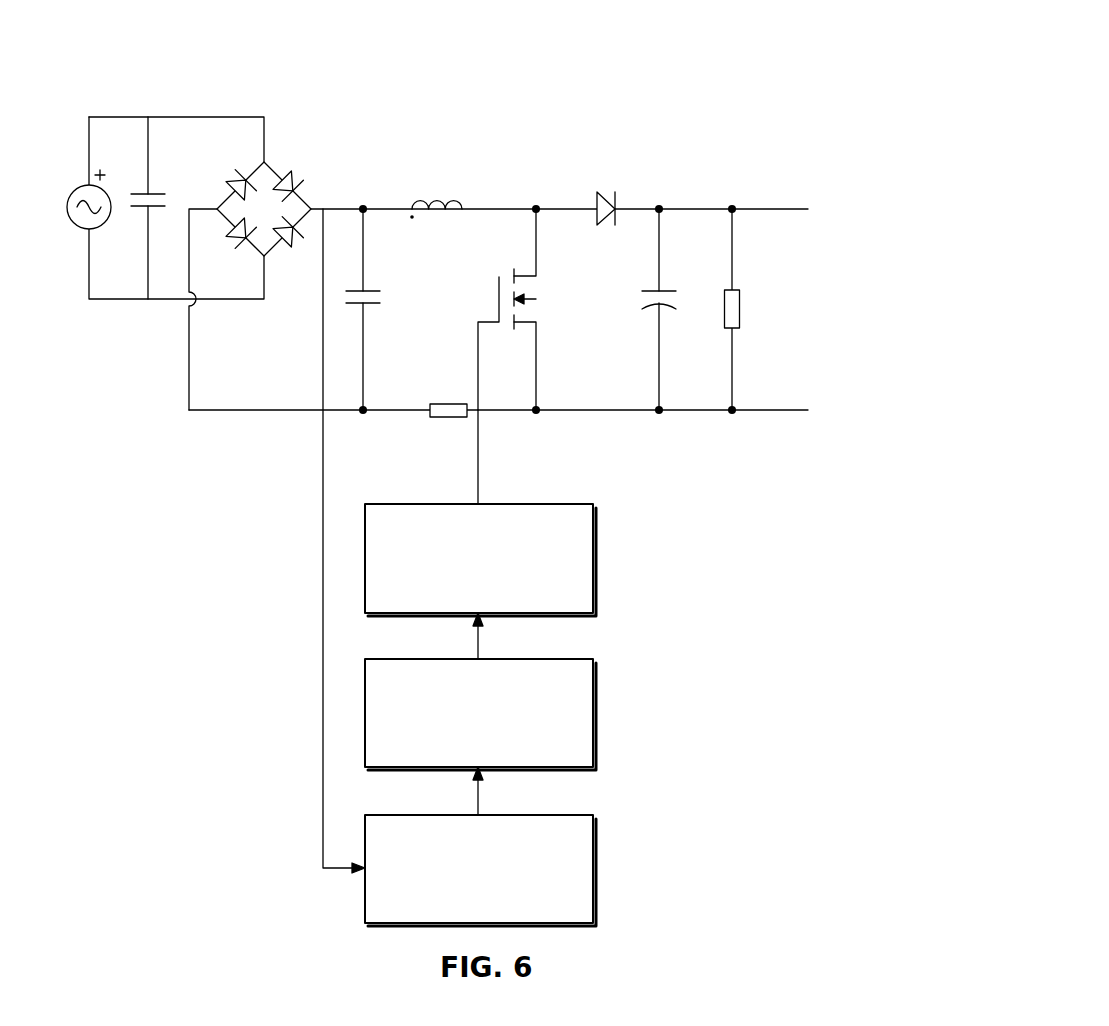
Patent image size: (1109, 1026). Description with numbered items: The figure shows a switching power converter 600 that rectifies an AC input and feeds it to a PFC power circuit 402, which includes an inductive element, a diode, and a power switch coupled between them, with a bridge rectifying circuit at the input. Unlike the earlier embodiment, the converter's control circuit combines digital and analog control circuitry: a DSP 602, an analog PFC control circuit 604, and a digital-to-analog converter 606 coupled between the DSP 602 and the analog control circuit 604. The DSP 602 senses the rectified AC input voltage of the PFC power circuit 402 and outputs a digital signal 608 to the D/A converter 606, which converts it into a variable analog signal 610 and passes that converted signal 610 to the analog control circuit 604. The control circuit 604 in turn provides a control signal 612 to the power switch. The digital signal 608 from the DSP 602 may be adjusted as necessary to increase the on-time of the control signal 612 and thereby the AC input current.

The switching power converter 600 is at (717, 48).
The PFC power circuit 402 is at (552, 157).
The DSP 602 is at (432, 814).
The analog PFC control circuit 604 is at (432, 502).
The digital-to-analog converter 606 is at (432, 657).
The digital signal 608 is at (478, 803).
The variable analog signal 610 is at (478, 647).
The control signal 612 is at (478, 472).